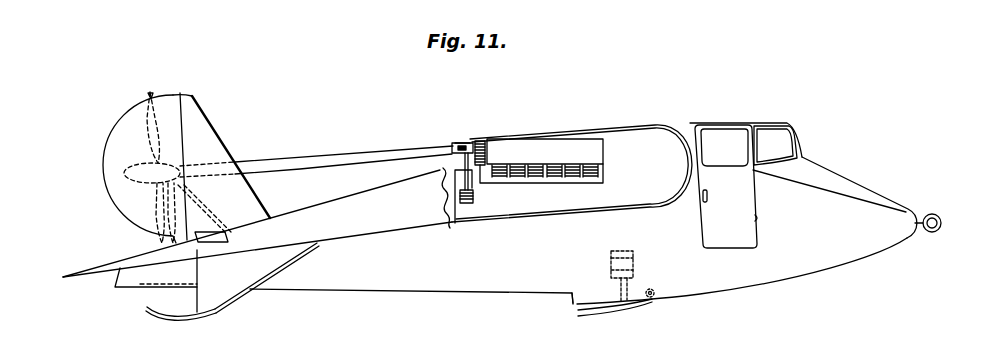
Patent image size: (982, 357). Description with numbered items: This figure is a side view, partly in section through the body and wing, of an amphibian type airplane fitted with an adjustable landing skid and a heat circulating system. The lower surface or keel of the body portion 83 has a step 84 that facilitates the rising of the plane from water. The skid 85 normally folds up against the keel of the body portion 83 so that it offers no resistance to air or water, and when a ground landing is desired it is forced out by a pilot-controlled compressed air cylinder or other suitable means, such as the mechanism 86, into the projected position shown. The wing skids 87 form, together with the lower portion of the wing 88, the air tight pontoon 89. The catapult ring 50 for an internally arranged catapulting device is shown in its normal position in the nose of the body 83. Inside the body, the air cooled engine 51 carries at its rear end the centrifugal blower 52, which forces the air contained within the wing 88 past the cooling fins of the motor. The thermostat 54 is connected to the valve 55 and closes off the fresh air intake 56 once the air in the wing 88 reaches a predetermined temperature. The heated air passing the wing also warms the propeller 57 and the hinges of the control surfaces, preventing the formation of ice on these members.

The catapult ring 50 is at (937, 210).
The air cooled engine 51 is at (488, 153).
The centrifugal blower 52 is at (484, 139).
The thermostat 54 is at (462, 205).
The valve 55 is at (452, 143).
The fresh air intake 56 is at (459, 142).
The propeller 57 is at (150, 92).
The body portion 83 is at (900, 238).
The step 84 is at (568, 303).
The skid 85 is at (604, 316).
The retracting mechanism 86 is at (633, 260).
The wing skid 87 is at (217, 310).
The wing 88 is at (353, 203).
The air tight pontoon 89 is at (240, 283).